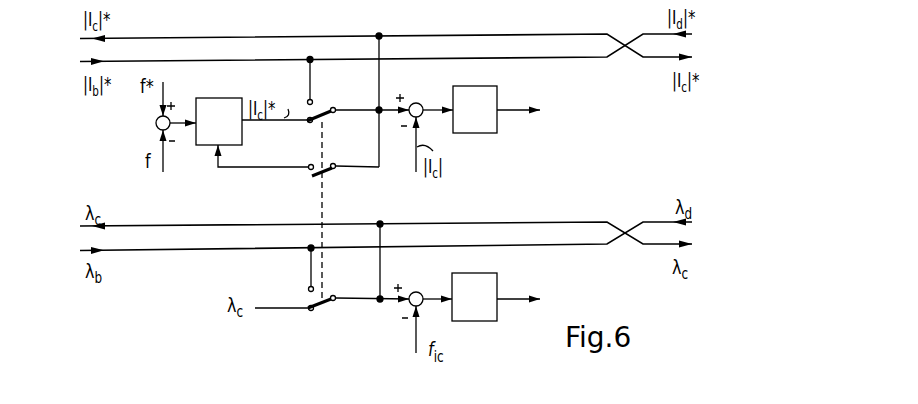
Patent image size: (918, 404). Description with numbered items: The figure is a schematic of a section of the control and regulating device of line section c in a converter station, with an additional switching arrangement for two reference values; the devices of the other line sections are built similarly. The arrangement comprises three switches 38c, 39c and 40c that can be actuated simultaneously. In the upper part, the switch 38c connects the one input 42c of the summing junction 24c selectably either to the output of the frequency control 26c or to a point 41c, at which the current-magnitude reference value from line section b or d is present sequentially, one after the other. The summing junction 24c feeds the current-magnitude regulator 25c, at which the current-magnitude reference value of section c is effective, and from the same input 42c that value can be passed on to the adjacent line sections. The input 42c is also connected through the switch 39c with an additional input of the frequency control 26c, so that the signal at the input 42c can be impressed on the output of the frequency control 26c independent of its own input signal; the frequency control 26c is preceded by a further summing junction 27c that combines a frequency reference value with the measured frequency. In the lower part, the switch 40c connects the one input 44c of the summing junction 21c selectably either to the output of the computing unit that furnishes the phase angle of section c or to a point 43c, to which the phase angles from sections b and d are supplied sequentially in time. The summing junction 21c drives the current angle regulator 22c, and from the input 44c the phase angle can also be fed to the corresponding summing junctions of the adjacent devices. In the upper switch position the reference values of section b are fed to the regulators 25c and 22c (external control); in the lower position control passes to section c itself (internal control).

The summing junction 21c is at (416, 292).
The current angle regulator 22c is at (498, 283).
The summing junction 24c is at (416, 103).
The current-magnitude regulator 25c is at (498, 95).
The frequency control 26c is at (226, 98).
The summing point 27c is at (156, 125).
The switch 38c is at (331, 106).
The switch 39c is at (330, 171).
The switch 40c is at (331, 295).
The point 41c is at (308, 61).
The input 42c is at (378, 113).
The point 43c is at (308, 253).
The input 44c is at (378, 302).